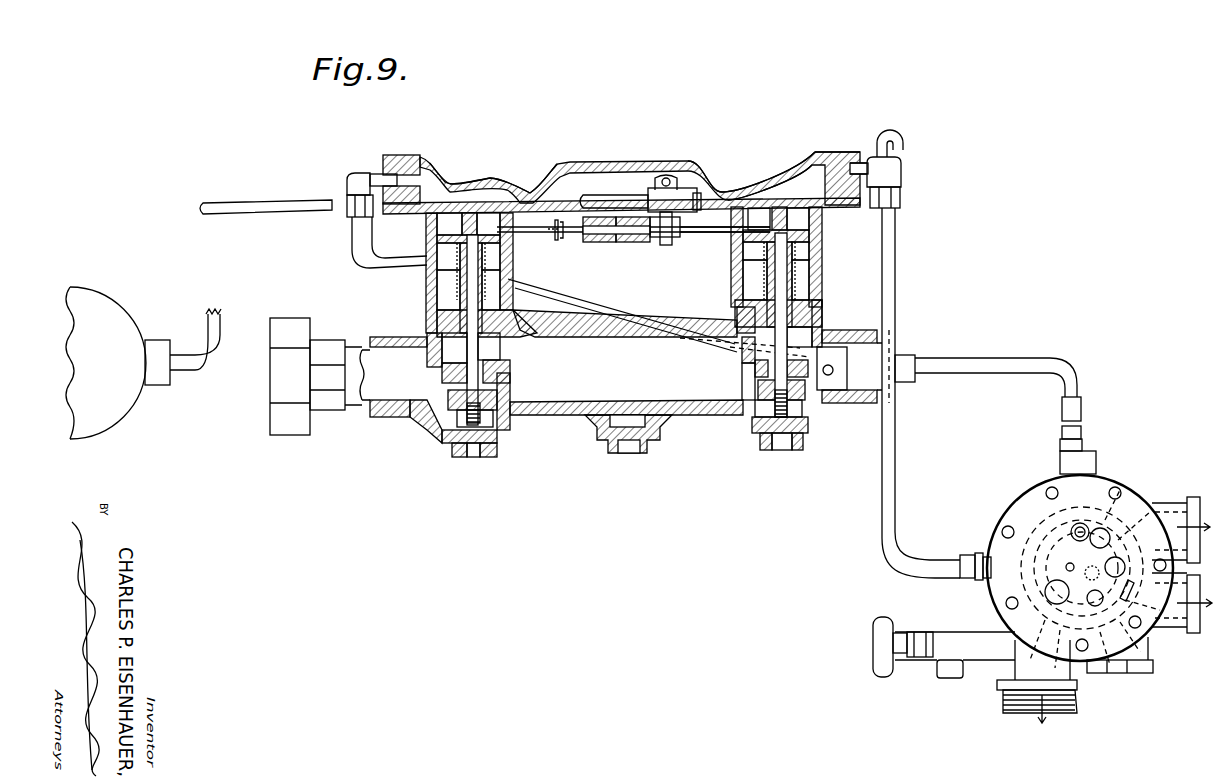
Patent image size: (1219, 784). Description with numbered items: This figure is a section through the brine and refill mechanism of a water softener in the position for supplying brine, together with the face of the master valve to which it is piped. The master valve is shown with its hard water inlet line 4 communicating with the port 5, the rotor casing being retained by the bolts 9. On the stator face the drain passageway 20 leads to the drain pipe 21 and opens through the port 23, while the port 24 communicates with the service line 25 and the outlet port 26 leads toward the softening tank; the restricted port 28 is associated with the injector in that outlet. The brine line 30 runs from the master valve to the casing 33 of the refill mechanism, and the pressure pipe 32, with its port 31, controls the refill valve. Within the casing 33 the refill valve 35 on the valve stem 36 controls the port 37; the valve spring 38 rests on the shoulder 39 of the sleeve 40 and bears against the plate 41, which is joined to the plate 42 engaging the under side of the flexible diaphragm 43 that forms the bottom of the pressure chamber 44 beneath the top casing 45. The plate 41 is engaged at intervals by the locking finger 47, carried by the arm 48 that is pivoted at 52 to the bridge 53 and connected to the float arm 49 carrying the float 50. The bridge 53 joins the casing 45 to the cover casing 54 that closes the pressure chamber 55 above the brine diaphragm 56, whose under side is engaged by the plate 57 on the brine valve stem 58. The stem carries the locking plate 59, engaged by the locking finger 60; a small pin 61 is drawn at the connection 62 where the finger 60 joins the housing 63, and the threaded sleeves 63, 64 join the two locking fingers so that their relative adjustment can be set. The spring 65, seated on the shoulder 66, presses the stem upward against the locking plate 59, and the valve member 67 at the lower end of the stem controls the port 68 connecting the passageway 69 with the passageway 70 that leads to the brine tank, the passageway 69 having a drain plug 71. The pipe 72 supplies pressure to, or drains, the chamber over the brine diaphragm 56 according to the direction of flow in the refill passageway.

The hard water inlet line 4 is at (1193, 579).
The port 5 is at (1130, 589).
The bolts 9 is at (1007, 607).
The passageway 20 is at (1127, 674).
The drain pipe 21 is at (1030, 707).
The port 23 is at (1096, 606).
The port 24 is at (1120, 560).
The service line 25 is at (1193, 500).
The outlet port 26 is at (1106, 533).
The restricted port 28 is at (1075, 530).
The brine line 30 is at (984, 349).
The port 31 is at (1071, 565).
The pressure pipe 32 is at (895, 283).
The casing 33 is at (866, 331).
The refill valve 35 is at (792, 396).
The valve stem 36 is at (782, 350).
The port 37 is at (762, 347).
The valve spring 38 is at (800, 248).
The shoulder 39 is at (807, 267).
The sleeve 40 is at (800, 286).
The plate 41 is at (820, 229).
The plate 42 is at (797, 173).
The flexible diaphragm 43 is at (762, 203).
The pressure chamber 44 is at (740, 191).
The top casing 45 is at (755, 196).
The locking finger 47 is at (687, 233).
The arm 48 is at (657, 239).
The float arm 49 is at (304, 207).
The float 50 is at (102, 303).
The pivot 52 is at (665, 178).
The bridge 53 is at (631, 161).
The cover casing 54 is at (468, 191).
The pressure chamber 55 is at (478, 197).
The brine diaphragm 56 is at (497, 205).
The plate 57 is at (500, 213).
The brine valve stem 58 is at (478, 349).
The locking plate 59 is at (428, 230).
The locking finger 60 is at (572, 234).
The pin 61 is at (557, 226).
The connection 62 is at (556, 240).
The housing 63 is at (597, 243).
The threaded sleeve 64 is at (616, 243).
The spring 65 is at (507, 256).
The shoulder 66 is at (490, 273).
The valve member 67 is at (497, 393).
The port 68 is at (467, 352).
The passageway 69 is at (551, 328).
The passageway 70 is at (392, 370).
The drain plug 71 is at (606, 454).
The pipe 72 is at (412, 263).